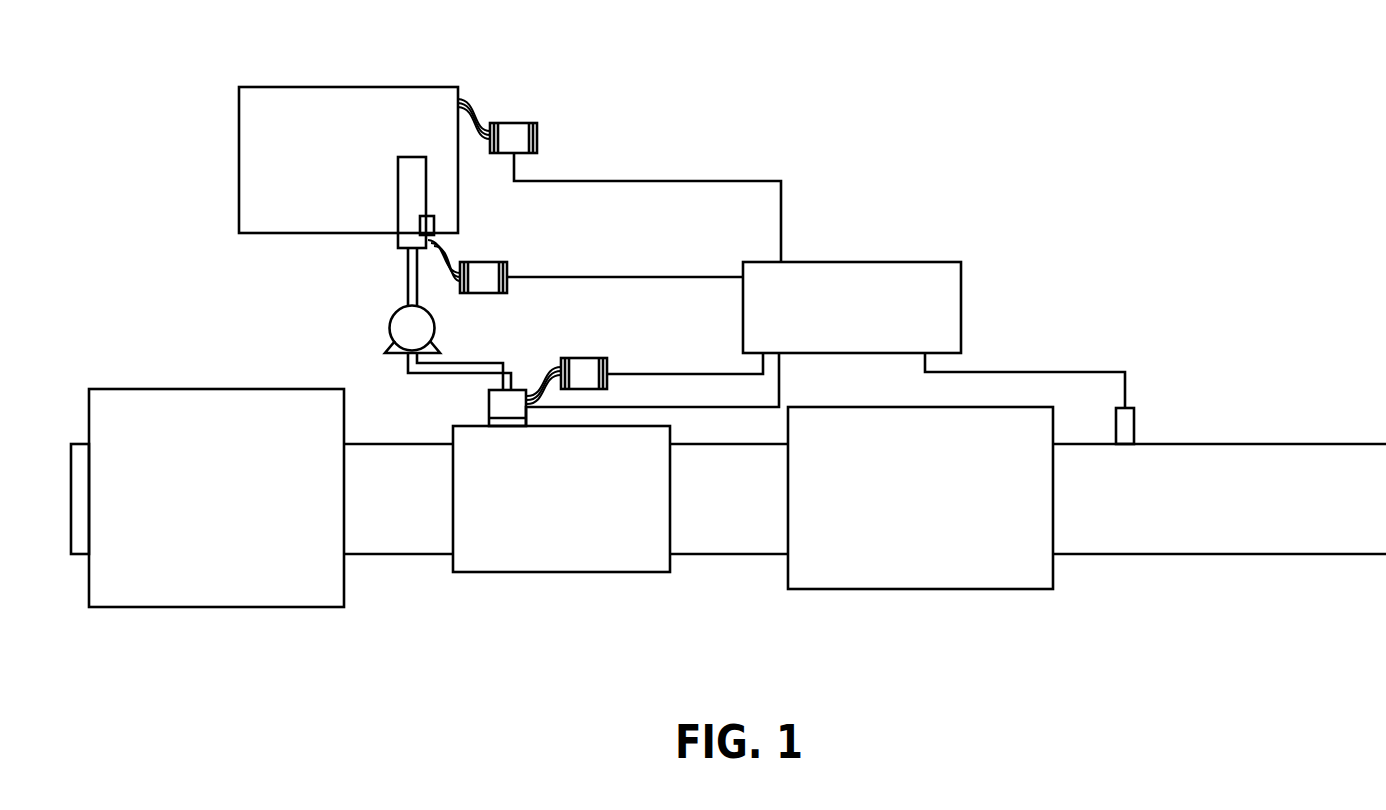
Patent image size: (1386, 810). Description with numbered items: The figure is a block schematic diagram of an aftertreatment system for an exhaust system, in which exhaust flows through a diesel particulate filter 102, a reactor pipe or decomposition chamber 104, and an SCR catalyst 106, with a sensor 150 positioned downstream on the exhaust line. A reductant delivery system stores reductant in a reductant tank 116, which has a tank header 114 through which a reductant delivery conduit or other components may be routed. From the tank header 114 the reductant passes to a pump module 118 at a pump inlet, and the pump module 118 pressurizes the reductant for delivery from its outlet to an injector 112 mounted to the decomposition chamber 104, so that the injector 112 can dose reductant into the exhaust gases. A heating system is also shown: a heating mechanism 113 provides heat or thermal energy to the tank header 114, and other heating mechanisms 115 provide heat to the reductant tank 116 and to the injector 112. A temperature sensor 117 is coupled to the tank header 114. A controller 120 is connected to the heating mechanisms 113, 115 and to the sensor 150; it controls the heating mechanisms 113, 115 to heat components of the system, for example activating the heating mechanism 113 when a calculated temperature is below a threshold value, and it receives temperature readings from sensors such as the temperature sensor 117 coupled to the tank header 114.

The diesel particulate filter 102 is at (288, 609).
The decomposition chamber 104 is at (548, 573).
The SCR catalyst 106 is at (887, 590).
The injector 112 is at (527, 389).
The heating mechanism 113 is at (508, 268).
The tank header 114 is at (397, 236).
The heating mechanisms 115 is at (537, 138).
The reductant tank 116 is at (398, 86).
The temperature sensor 117 is at (434, 228).
The pump module 118 is at (388, 323).
The controller 120 is at (928, 260).
The sensor 150 is at (1134, 430).